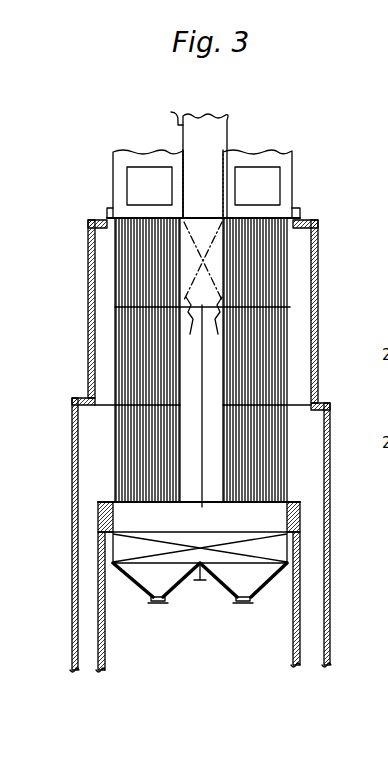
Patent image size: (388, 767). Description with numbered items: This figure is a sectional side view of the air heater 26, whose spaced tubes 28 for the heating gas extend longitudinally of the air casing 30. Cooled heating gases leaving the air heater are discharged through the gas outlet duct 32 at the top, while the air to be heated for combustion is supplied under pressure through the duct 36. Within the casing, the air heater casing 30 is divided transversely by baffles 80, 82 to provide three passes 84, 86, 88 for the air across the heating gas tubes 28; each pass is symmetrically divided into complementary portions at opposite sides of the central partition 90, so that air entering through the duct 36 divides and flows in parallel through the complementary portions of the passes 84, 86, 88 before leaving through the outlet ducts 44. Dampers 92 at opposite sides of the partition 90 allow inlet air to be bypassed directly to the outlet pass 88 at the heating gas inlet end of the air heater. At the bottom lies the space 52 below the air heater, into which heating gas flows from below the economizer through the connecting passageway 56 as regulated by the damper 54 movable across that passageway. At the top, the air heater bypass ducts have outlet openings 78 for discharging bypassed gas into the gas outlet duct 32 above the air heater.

The air heater 26 is at (318, 271).
The spaced tubes 28 is at (280, 346).
The air casing 30 is at (88, 315).
The gas outlet duct 32 is at (218, 172).
The duct 36 is at (165, 113).
The outlet ducts 44 is at (72, 635).
The space 52 is at (210, 530).
The damper 54 is at (270, 550).
The connecting passageway 56 is at (141, 547).
The outlet opening 78 is at (156, 196).
The baffle 80 is at (130, 303).
The baffle 82 is at (127, 403).
The pass 84 is at (200, 262).
The pass 86 is at (200, 356).
The pass 88 is at (200, 453).
The central partition 90 is at (201, 407).
The dampers 92 is at (196, 320).